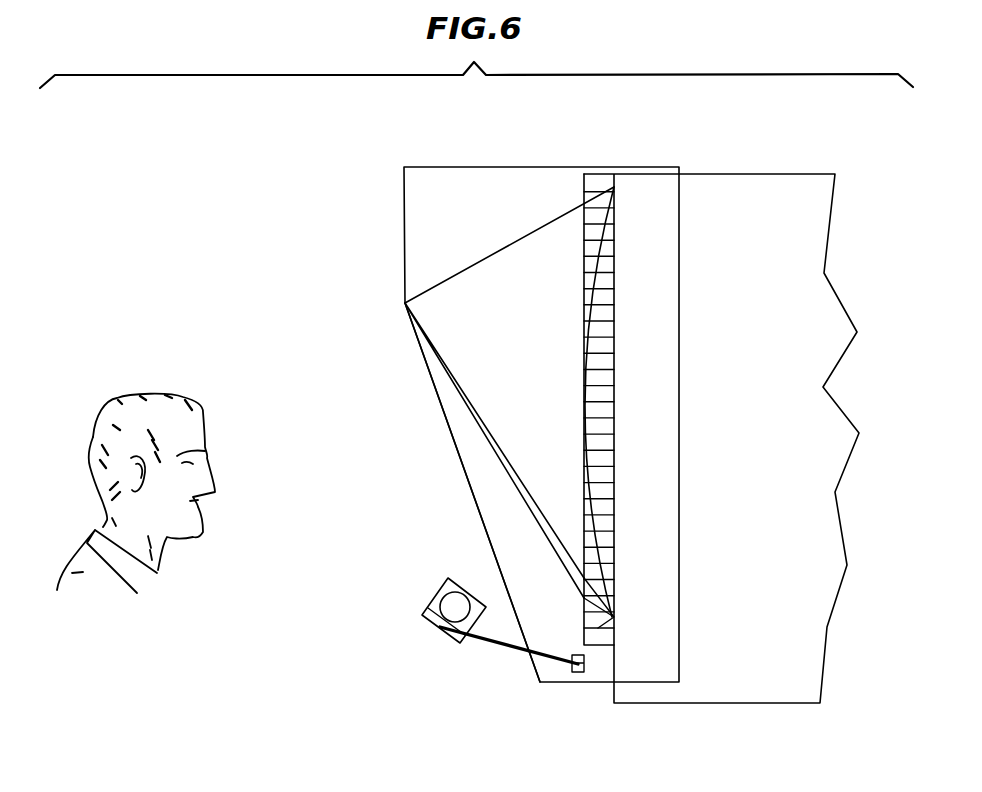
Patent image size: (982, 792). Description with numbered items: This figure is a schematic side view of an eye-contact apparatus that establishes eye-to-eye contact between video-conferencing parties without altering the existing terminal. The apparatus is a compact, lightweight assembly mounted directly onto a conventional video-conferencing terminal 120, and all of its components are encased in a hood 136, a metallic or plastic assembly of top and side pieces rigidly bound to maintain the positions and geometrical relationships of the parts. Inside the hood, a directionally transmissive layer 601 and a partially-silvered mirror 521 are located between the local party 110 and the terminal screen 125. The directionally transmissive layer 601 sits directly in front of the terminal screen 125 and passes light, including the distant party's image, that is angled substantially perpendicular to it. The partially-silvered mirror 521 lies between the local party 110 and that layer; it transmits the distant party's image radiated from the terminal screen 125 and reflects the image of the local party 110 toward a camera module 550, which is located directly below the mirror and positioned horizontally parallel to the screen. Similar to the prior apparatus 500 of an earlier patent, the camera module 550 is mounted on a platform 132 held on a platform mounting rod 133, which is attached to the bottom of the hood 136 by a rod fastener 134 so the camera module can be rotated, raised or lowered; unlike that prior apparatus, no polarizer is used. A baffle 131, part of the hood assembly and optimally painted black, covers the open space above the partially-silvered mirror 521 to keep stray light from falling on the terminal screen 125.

The apparatus 500 is at (303, 140).
The local party 110 is at (120, 392).
The video-conferencing terminal 120 is at (770, 174).
The terminal screen 125 is at (590, 332).
The baffle 131 is at (503, 247).
The platform 132 is at (437, 628).
The platform mounting rod 133 is at (507, 647).
The rod fastener 134 is at (595, 675).
The hood 136 is at (535, 167).
The partially-silvered mirror 521 is at (463, 393).
The camera module 550 is at (428, 604).
The directionally transmissive layer 601 is at (603, 179).